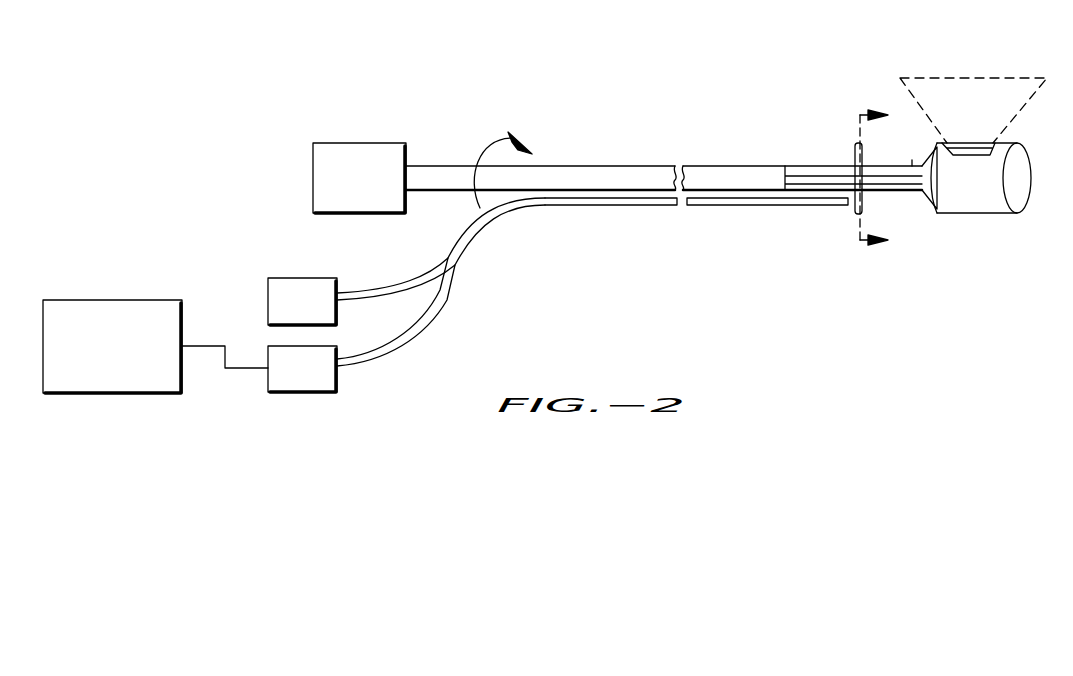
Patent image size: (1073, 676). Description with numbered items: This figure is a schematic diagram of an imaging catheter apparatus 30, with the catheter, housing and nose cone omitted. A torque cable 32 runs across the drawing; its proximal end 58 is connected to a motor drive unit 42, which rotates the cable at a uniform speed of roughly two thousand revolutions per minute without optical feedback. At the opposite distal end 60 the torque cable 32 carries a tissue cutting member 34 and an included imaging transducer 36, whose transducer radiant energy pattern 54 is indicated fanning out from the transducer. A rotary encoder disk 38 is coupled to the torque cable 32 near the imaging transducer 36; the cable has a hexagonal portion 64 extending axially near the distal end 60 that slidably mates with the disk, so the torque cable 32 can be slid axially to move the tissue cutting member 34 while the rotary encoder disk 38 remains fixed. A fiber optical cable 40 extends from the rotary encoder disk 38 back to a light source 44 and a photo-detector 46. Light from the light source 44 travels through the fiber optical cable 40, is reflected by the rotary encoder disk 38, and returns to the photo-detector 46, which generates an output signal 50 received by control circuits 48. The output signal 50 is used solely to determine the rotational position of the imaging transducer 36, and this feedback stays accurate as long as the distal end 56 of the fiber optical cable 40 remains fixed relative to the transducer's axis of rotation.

The imaging catheter apparatus 30 is at (810, 310).
The torque cable 32 is at (703, 163).
The tissue cutting member 34 is at (985, 195).
The imaging transducer 36 is at (990, 150).
The rotary encoder disk 38 is at (866, 203).
The fiber optical cable 40 is at (706, 207).
The motor drive unit 42 is at (342, 150).
The light source 44 is at (284, 285).
The photo-detector 46 is at (305, 383).
The control circuits 48 is at (118, 372).
The output signal 50 is at (236, 372).
The transducer radiant energy pattern 54 is at (1013, 76).
The distal end of fiber optical cable 56 is at (813, 206).
The proximal end of torque cable 58 is at (433, 165).
The distal end of torque cable 60 is at (912, 160).
The hexagonal portion 64 is at (806, 126).